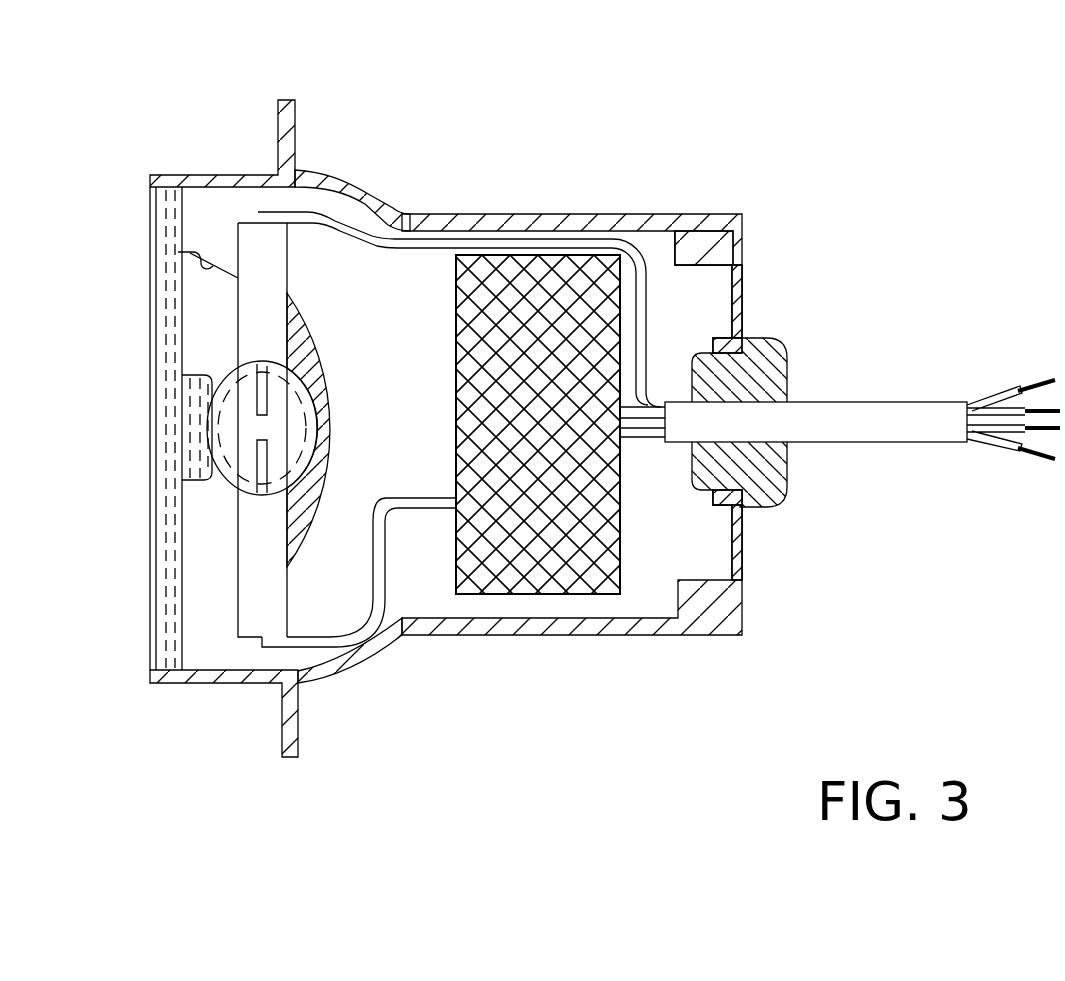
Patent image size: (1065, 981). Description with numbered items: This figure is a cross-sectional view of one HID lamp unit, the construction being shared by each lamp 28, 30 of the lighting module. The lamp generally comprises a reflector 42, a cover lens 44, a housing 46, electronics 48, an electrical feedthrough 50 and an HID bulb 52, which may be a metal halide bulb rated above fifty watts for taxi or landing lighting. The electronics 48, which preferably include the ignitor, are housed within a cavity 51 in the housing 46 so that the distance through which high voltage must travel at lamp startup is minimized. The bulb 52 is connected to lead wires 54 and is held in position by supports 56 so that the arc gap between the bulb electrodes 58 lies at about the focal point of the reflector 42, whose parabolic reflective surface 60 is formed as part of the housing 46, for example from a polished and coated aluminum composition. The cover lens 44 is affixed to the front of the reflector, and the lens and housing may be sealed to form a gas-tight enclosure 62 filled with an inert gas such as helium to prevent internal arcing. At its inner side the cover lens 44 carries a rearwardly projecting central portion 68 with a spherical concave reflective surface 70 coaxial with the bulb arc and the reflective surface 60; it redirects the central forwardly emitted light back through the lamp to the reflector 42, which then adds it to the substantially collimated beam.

The lamp 28 is at (719, 445).
The lamp 30 is at (572, 397).
The reflector 42 is at (213, 283).
The cover lens 44 is at (146, 560).
The housing 46 is at (283, 760).
The electronics 48 is at (590, 598).
The electrical feedthrough 50 is at (777, 337).
The cavity 51 is at (688, 303).
The HID bulb 52 is at (237, 413).
The lead wires 54 is at (336, 200).
The supports 56 is at (293, 263).
The bulb electrodes 58 is at (245, 385).
The parabolic reflective surface 60 is at (187, 252).
The gas-tight enclosure 62 is at (208, 573).
The rearwardly projecting central portion 68 is at (188, 490).
The spherical concave reflective surface 70 is at (200, 430).